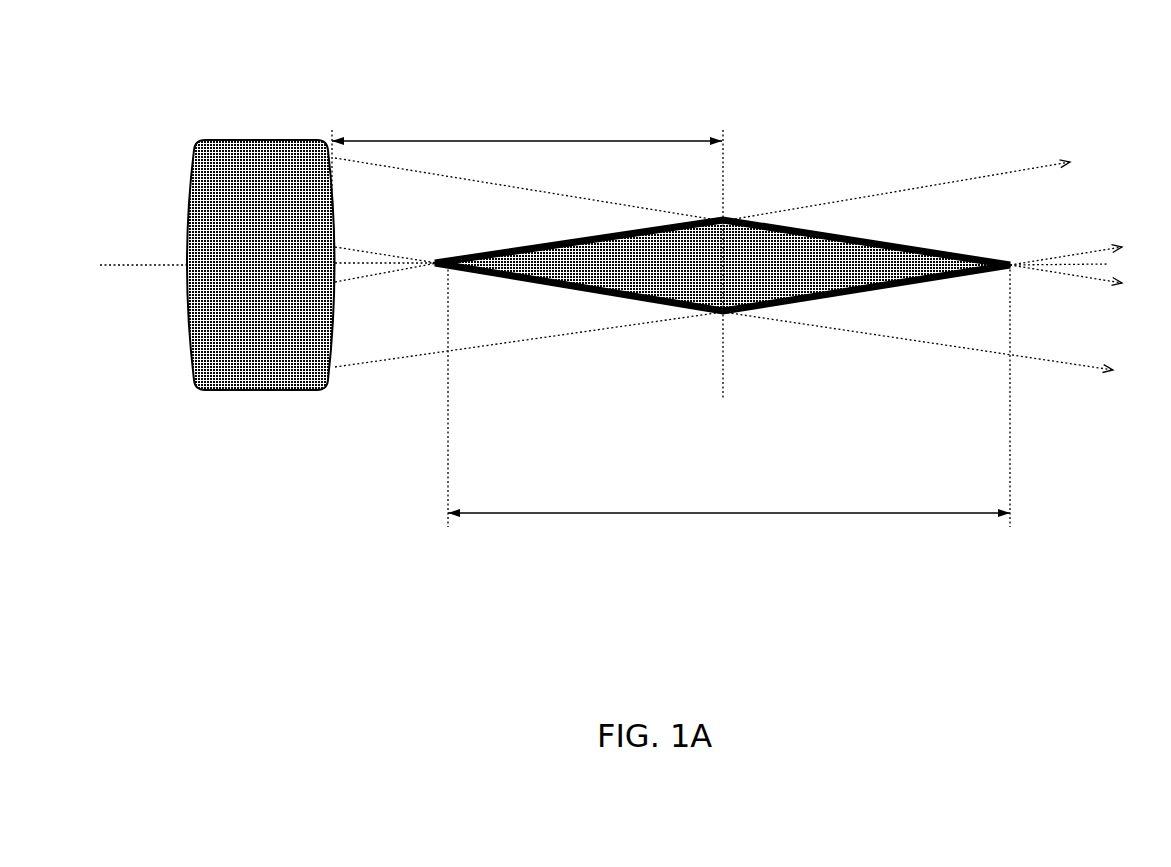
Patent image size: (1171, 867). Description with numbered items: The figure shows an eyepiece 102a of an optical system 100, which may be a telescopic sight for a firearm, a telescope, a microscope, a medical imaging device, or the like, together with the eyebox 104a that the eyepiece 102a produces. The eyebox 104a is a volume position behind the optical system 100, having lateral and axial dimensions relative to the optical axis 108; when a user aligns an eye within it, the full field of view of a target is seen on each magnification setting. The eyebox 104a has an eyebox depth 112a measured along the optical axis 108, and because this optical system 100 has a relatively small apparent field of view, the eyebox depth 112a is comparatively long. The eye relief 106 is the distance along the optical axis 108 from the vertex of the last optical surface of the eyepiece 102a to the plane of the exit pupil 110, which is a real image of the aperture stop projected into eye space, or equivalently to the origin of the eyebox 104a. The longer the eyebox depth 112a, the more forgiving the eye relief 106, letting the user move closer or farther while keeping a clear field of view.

The optical system 100 is at (122, 107).
The eyepiece 102a is at (287, 278).
The eyebox 104a is at (752, 274).
The eye relief 106 is at (534, 139).
The optical axis 108 is at (130, 268).
The exit pupil 110 is at (727, 376).
The eyebox depth 112a is at (730, 515).